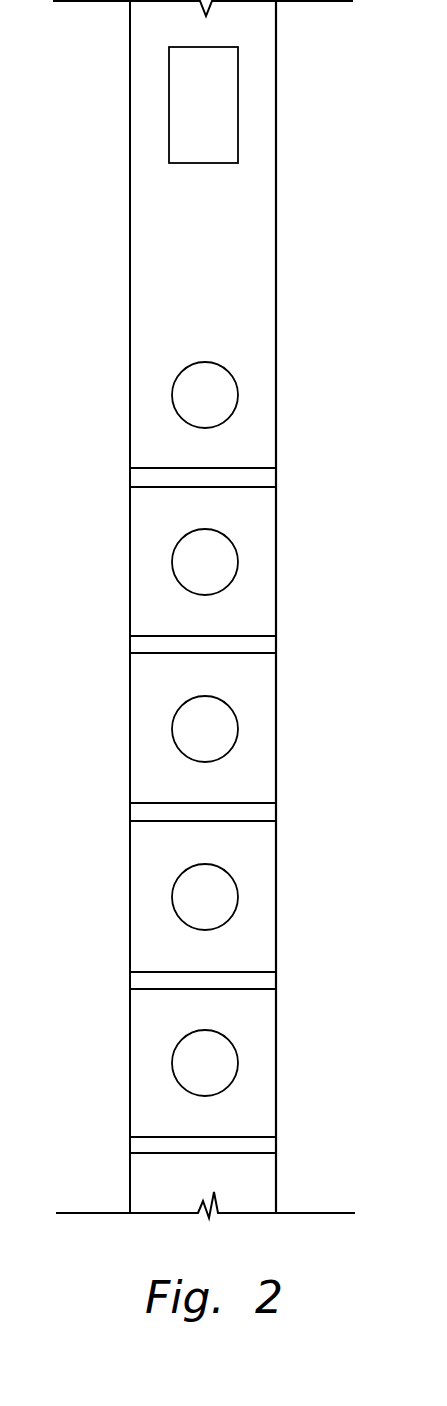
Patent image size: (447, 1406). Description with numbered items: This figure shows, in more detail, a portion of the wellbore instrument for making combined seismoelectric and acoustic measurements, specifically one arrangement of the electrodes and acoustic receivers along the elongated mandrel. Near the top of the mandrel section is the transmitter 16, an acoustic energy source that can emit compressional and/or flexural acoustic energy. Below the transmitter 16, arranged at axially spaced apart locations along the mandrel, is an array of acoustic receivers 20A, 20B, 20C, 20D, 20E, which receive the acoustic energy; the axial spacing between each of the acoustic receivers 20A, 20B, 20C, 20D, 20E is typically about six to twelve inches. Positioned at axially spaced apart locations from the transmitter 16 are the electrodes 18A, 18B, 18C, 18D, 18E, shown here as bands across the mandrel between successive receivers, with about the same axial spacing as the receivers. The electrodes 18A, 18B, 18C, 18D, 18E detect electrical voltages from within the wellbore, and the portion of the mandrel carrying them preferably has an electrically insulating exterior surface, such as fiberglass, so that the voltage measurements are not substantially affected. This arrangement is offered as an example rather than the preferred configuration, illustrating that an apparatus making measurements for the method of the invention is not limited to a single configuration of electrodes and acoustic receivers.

The transmitter 16 is at (183, 110).
The electrode 18A is at (140, 478).
The electrode 18B is at (140, 643).
The electrode 18C is at (140, 810).
The electrode 18D is at (140, 978).
The electrode 18E is at (140, 1143).
The acoustic receiver 20A is at (213, 391).
The acoustic receiver 20B is at (213, 557).
The acoustic receiver 20C is at (213, 729).
The acoustic receiver 20D is at (213, 893).
The acoustic receiver 20E is at (213, 1060).